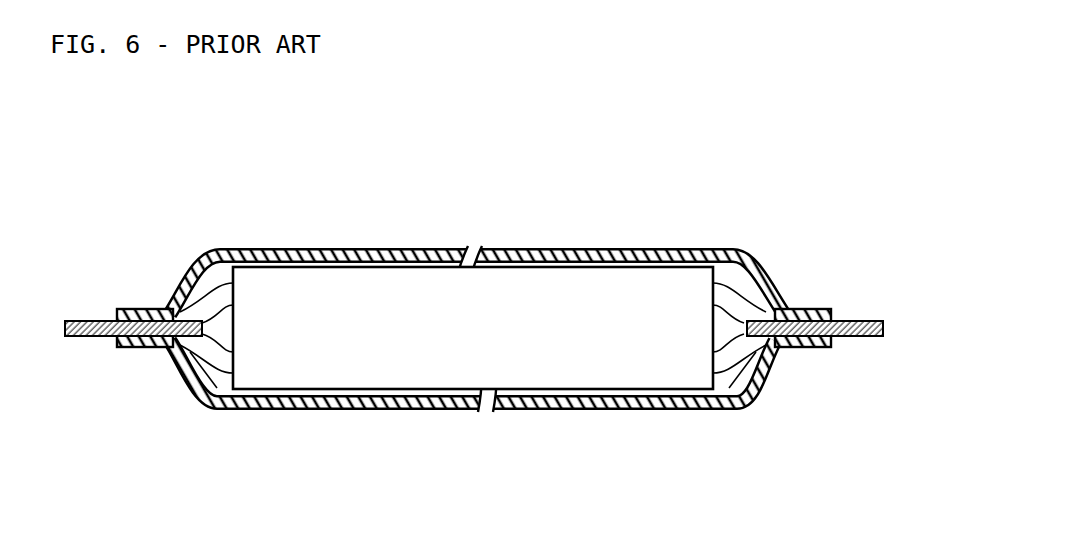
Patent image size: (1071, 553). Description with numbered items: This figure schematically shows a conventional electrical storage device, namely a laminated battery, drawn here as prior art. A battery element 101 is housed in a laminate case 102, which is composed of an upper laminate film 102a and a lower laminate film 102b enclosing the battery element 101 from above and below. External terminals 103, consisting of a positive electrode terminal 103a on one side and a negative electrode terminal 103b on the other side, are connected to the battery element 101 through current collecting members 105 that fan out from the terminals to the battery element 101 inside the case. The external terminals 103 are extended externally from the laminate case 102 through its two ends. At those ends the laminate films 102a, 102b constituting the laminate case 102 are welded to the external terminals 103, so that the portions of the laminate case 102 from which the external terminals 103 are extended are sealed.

The battery element 101 is at (580, 355).
The laminate case 102 is at (474, 289).
The laminate film 102a is at (360, 247).
The laminate film 102b is at (348, 410).
The external terminals 103 is at (470, 249).
The positive electrode terminal 103a is at (846, 320).
The negative electrode terminal 103b is at (93, 320).
The current collecting members 105 is at (200, 340).